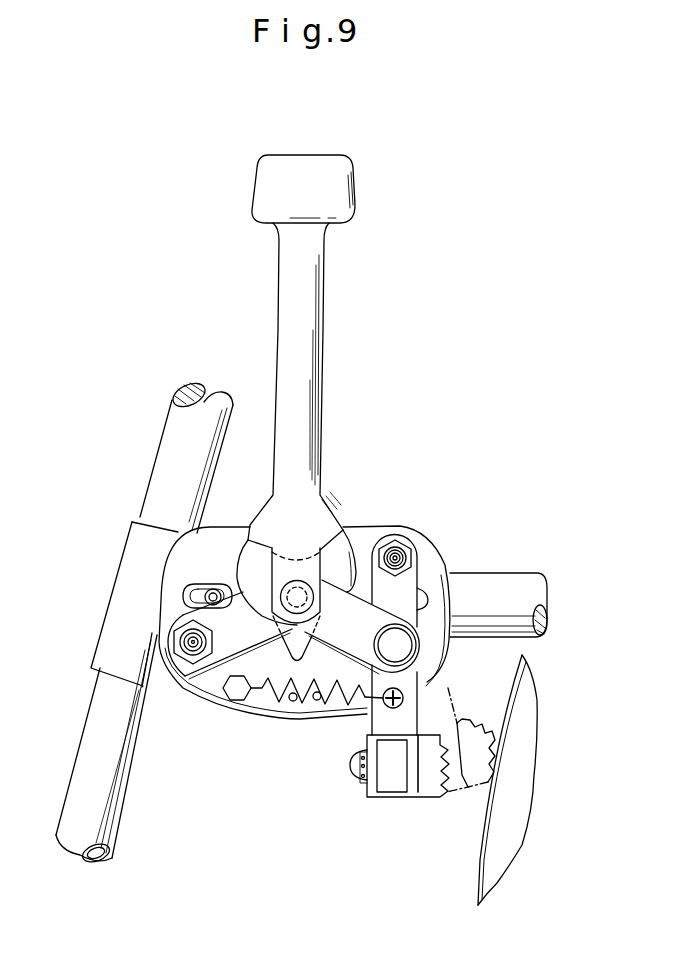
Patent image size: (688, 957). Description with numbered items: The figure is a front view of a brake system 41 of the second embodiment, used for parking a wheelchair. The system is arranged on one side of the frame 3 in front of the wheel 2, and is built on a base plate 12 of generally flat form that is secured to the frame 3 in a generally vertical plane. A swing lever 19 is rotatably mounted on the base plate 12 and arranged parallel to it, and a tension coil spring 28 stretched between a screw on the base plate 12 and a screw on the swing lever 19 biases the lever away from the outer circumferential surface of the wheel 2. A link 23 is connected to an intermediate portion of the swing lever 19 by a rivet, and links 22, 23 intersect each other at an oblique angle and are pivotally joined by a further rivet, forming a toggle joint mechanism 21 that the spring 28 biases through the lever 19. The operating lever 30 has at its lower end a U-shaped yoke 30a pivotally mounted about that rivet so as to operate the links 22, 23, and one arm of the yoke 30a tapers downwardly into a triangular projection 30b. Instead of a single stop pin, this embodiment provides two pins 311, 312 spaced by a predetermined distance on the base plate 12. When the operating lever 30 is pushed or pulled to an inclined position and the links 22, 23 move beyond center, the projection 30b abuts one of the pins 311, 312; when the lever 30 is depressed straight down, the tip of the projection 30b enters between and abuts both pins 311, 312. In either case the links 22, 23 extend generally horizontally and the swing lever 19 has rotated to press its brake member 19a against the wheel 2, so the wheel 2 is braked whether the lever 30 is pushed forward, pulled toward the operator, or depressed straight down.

The wheel 2 is at (508, 832).
The frame 3 is at (493, 587).
The base plate 12 is at (425, 552).
The swing lever 19 is at (405, 679).
The end block of arm 19a is at (393, 787).
The toggle joint mechanism 21 is at (226, 757).
The link 22 is at (255, 595).
The link 23 is at (230, 632).
The tension coil spring 28 is at (268, 700).
The operating lever 30 is at (305, 308).
The U-shaped yoke 30a is at (313, 571).
The triangular projection 30b is at (332, 693).
The brake system 41 is at (420, 418).
The pin 311 is at (293, 703).
The pin 312 is at (317, 707).